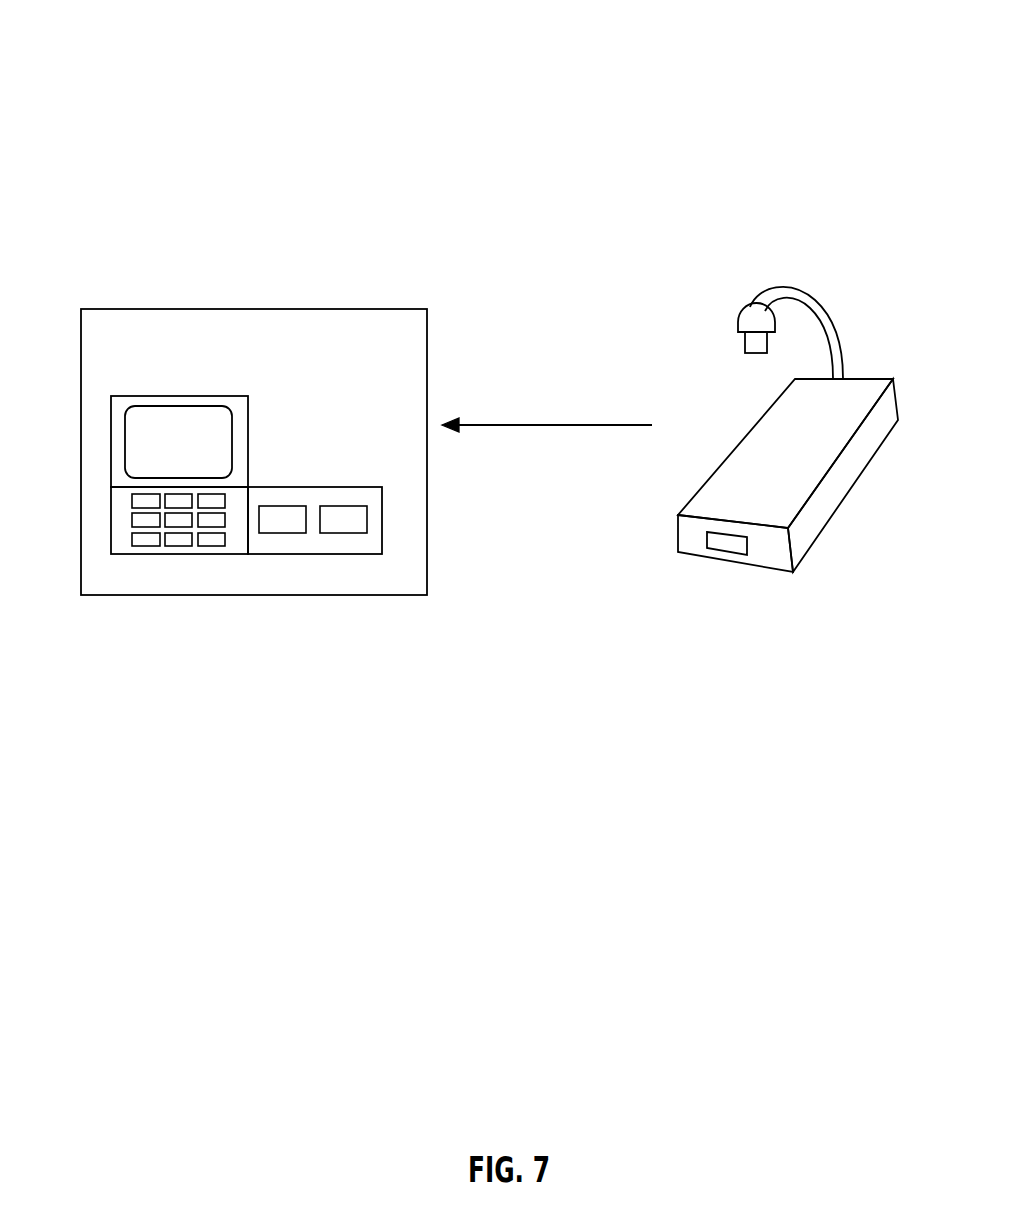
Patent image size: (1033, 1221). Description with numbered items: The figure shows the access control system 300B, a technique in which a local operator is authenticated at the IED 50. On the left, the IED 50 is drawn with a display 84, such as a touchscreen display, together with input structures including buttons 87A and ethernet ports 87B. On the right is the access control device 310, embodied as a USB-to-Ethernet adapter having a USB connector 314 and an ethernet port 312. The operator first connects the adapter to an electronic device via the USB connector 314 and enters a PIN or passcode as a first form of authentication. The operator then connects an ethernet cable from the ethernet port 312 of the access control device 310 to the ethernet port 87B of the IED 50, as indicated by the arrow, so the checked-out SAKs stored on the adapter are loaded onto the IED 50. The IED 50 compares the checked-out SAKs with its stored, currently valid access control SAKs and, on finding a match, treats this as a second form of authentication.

The IED 50 is at (198, 309).
The display 84 is at (110, 445).
The buttons 87A is at (176, 564).
The ethernet port 87B is at (349, 564).
The access control system 300B is at (731, 58).
The access control device 310 is at (855, 478).
The ethernet port 312 is at (730, 547).
The USB connector 314 is at (738, 330).